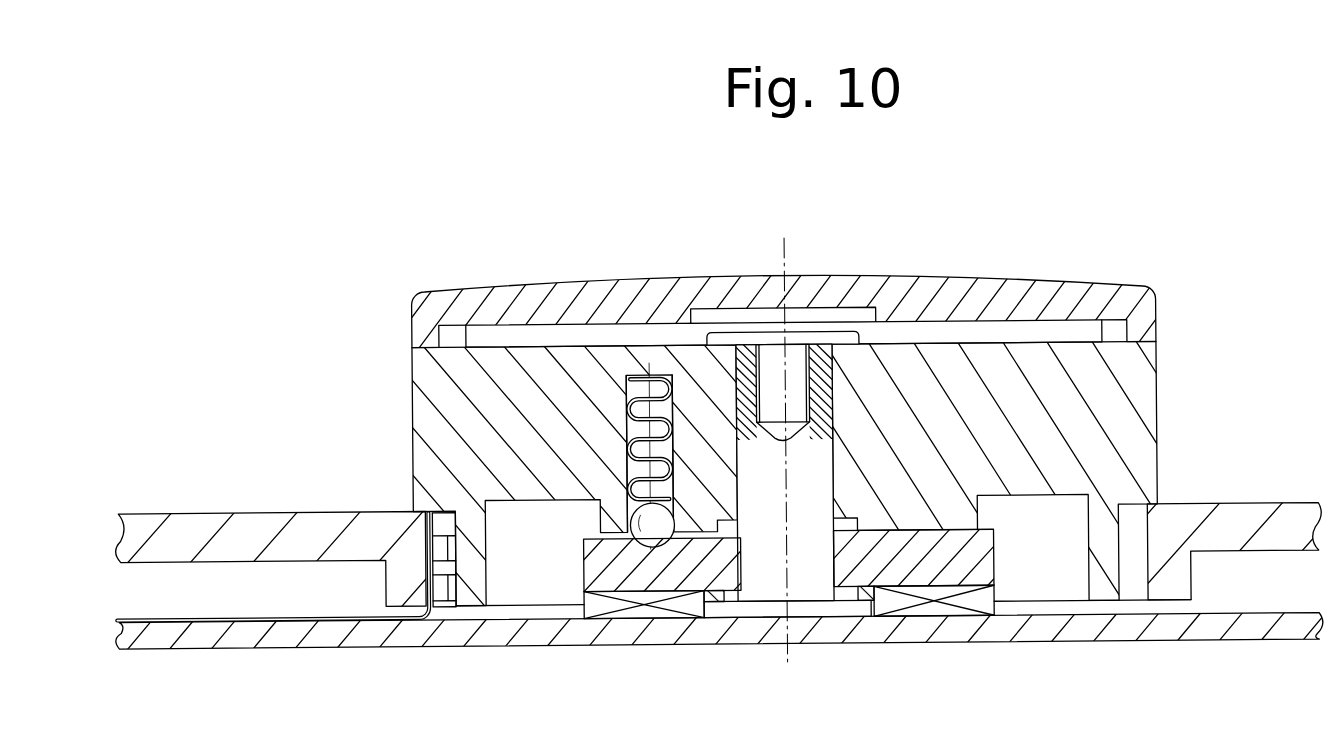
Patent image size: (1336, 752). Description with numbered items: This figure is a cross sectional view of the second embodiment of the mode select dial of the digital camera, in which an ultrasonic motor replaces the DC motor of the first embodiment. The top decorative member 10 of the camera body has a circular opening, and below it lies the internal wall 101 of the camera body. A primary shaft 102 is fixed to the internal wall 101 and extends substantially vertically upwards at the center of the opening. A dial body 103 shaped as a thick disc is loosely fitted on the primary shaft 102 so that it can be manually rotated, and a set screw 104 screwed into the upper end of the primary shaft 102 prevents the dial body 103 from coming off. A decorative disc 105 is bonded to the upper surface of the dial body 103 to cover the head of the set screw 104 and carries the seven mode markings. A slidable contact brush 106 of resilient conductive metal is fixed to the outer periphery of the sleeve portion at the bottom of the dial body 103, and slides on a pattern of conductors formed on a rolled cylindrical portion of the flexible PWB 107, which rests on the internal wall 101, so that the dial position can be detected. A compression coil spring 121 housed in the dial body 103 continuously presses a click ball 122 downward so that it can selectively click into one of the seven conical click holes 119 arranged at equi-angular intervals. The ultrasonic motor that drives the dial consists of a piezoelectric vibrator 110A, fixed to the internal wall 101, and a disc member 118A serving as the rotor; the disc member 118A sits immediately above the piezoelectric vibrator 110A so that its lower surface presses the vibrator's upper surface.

The top decorative member 10 is at (260, 526).
The internal wall 101 is at (352, 642).
The primary shaft 102 is at (755, 467).
The dial body 103 is at (1145, 391).
The set screw 104 is at (751, 334).
The decorative disc 105 is at (978, 301).
The slidable contact brush 106 is at (427, 538).
The flexible PWB 107 is at (209, 614).
The piezoelectric vibrator 110A is at (938, 617).
The disc member 118A is at (978, 558).
The click hole 119 is at (661, 547).
The compression coil spring 121 is at (641, 372).
The click ball 122 is at (560, 430).